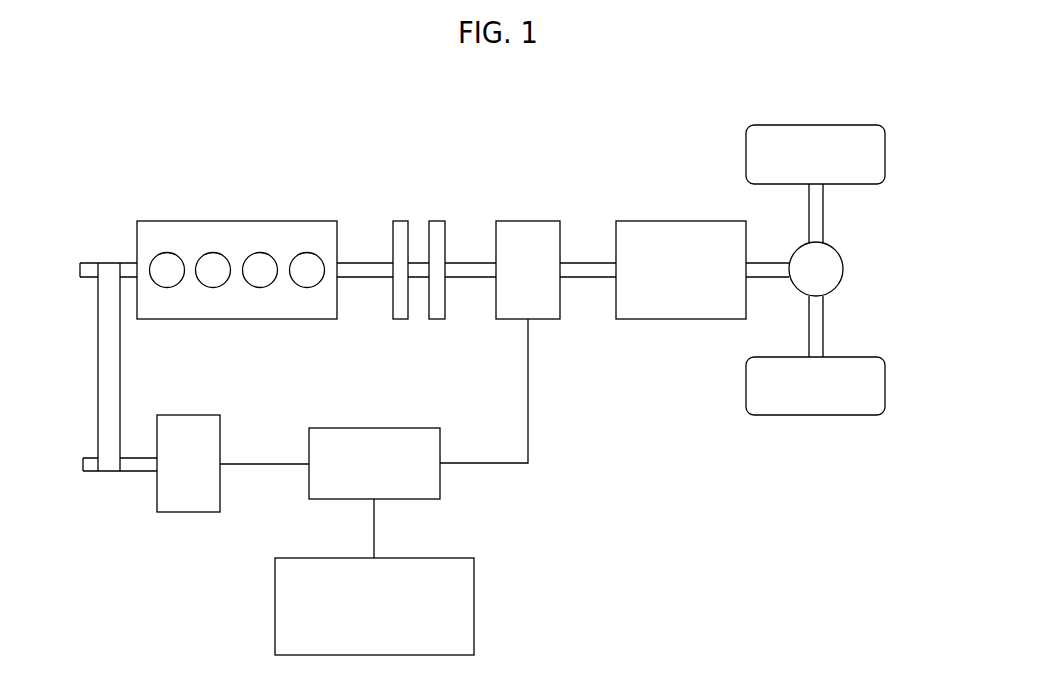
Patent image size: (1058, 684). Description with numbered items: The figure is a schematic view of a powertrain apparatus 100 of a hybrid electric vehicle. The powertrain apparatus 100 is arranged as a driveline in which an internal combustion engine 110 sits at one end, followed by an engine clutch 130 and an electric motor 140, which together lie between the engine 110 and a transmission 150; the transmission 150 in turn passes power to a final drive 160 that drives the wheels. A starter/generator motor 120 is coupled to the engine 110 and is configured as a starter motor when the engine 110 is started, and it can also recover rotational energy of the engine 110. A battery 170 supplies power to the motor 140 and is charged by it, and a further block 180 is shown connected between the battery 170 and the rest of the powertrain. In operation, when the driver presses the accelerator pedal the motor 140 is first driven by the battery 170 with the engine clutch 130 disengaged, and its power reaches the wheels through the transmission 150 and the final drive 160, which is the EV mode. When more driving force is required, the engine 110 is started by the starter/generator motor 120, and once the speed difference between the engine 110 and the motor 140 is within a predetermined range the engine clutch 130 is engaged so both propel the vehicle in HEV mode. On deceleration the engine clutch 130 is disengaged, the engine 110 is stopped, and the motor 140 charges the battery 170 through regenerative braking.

The powertrain apparatus 100 is at (340, 117).
The internal combustion engine 110 is at (228, 221).
The starter/generator motor 120 is at (188, 512).
The engine clutch 130 is at (437, 221).
The electric motor 140 is at (523, 221).
The transmission 150 is at (667, 221).
The final drive 160 is at (839, 250).
The battery 170 is at (474, 606).
The controller 180 is at (440, 488).